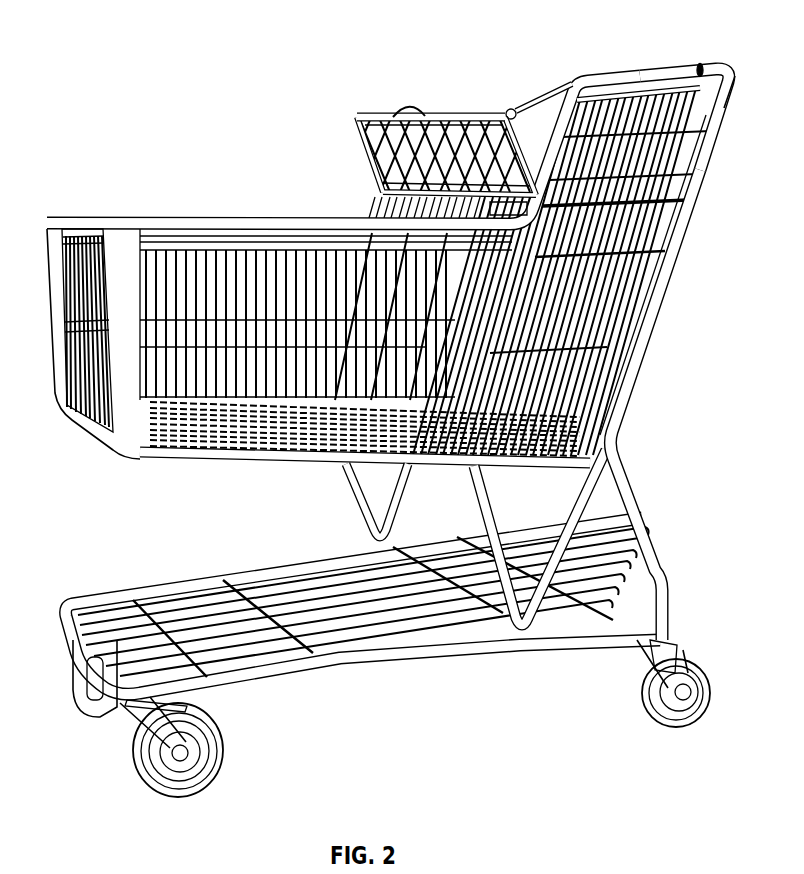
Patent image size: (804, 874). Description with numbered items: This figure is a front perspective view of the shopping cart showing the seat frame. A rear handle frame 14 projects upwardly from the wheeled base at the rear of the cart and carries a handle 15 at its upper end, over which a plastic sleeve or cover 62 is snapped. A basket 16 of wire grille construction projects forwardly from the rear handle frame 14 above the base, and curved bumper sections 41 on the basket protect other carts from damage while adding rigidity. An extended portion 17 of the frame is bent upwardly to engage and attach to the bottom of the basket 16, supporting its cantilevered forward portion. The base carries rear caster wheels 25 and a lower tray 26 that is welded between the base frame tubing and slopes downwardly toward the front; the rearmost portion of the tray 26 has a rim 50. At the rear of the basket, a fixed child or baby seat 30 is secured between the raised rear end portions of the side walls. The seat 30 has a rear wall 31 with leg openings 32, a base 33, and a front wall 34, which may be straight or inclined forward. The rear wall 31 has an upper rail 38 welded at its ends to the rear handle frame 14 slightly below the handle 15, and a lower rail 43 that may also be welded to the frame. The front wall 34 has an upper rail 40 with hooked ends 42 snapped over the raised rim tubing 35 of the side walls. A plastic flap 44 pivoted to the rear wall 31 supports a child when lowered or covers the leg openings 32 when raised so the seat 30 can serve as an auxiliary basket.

The rear handle frame 14 is at (645, 321).
The handle 15 is at (658, 63).
The basket 16 is at (197, 252).
The extended portion 17 is at (352, 510).
The rear caster wheels 25 is at (703, 148).
The tray 26 is at (218, 582).
The child or baby seat 30 is at (648, 255).
The rear wall 31 is at (723, 100).
The leg openings 32 is at (514, 112).
The base 33 is at (377, 175).
The front wall 34 is at (361, 117).
The raised rim tubing 35 is at (421, 112).
The upper rail 38 is at (512, 108).
The upper rail 40 is at (423, 123).
The curved bumper sections 41 is at (64, 338).
The hooked ends 42 is at (407, 104).
The lower rail 43 is at (670, 194).
The plastic flap 44 is at (627, 258).
The rim 50 is at (612, 562).
The sleeve or cover 62 is at (721, 60).